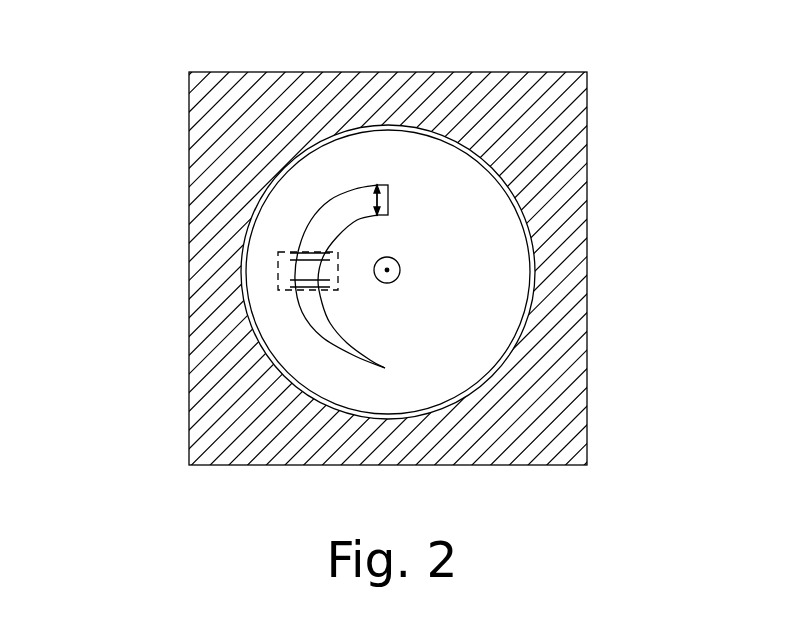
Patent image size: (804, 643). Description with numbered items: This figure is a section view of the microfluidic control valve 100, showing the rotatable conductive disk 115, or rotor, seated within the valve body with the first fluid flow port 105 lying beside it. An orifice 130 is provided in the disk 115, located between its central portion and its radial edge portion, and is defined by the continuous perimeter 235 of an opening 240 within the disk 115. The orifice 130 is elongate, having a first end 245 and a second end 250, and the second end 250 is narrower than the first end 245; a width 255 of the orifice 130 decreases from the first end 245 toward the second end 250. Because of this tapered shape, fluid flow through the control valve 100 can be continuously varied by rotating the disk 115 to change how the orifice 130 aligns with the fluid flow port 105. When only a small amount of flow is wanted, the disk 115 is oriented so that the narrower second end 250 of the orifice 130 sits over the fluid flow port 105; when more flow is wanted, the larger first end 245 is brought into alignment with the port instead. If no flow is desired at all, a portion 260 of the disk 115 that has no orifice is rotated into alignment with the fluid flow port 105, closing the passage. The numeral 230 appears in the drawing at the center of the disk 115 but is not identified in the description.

The control valve 100 is at (102, 135).
The first fluid flow port 105 is at (303, 275).
The rotatable conductive disk 115 is at (490, 227).
The orifice 130 is at (373, 183).
The rotor axis 230 is at (418, 263).
The continuous perimeter 235 is at (358, 198).
The opening 240 is at (340, 203).
The first end 245 is at (390, 194).
The second end 250 is at (382, 369).
The width 255 is at (376, 212).
The portion of the disk not having an orifice 260 is at (460, 338).